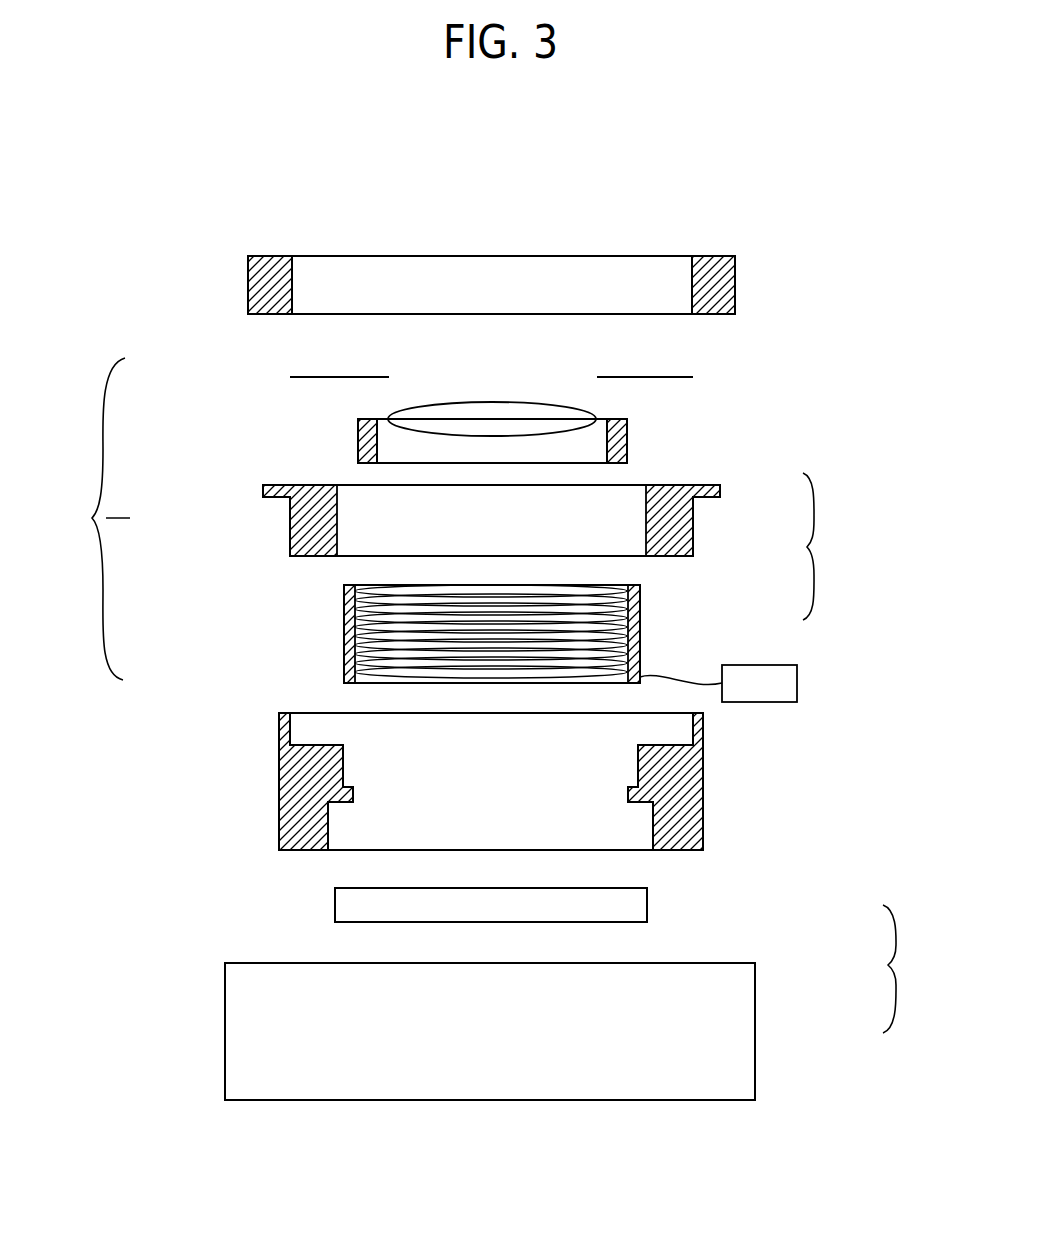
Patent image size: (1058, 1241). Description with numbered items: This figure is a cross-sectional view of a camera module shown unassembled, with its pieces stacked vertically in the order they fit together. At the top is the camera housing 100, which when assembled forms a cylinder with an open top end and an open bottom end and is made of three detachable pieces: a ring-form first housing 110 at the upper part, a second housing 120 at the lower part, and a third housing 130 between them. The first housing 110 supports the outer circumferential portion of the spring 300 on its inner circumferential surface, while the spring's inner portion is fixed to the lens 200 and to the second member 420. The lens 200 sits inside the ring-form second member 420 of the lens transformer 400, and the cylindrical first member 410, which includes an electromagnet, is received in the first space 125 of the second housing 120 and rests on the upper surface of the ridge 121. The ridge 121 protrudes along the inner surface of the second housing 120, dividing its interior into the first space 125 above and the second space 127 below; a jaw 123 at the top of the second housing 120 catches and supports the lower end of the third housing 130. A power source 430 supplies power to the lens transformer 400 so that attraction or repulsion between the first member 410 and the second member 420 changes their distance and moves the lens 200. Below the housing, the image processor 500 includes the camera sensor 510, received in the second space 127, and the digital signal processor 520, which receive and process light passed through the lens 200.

The camera housing 100 is at (84, 519).
The first housing 110 is at (268, 288).
The second housing 120 is at (281, 771).
The ridge 121 is at (348, 786).
The jaw 123 is at (668, 743).
The first space 125 is at (610, 765).
The second space 127 is at (350, 832).
The third housing 130 is at (308, 522).
The lens 200 is at (563, 415).
The spring 300 is at (655, 376).
The lens transformer 400 is at (835, 546).
The first member 410 is at (640, 622).
The second member 420 is at (623, 437).
The power source 430 is at (797, 683).
The image processor 500 is at (915, 969).
The camera sensor 510 is at (630, 903).
The digital signal processor 520 is at (735, 1027).